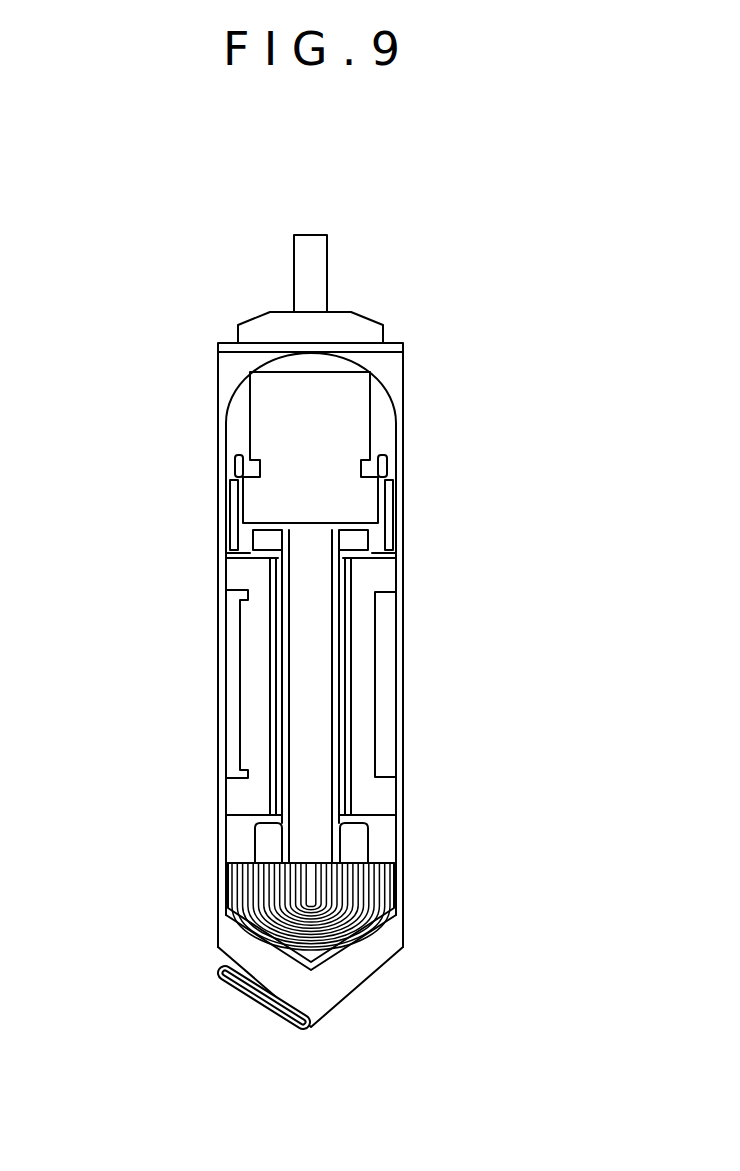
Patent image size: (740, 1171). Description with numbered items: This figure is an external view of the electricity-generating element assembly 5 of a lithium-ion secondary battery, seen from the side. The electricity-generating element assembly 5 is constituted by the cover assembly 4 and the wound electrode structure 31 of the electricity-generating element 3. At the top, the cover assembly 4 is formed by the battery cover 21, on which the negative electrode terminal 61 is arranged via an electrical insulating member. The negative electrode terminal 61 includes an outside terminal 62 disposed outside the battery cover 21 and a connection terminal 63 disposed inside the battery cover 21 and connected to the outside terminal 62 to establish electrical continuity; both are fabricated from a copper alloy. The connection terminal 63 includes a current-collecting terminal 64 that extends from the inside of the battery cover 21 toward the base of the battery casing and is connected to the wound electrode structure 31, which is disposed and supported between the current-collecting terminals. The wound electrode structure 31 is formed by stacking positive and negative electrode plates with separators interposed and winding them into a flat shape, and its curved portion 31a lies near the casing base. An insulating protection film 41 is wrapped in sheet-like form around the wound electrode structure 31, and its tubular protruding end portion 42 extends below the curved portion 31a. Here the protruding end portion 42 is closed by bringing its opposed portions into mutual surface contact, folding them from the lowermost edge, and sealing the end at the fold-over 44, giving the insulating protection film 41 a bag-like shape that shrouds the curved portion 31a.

The electricity-generating element 3 is at (224, 427).
The cover assembly 4 is at (228, 330).
The electricity-generating element assembly 5 is at (103, 290).
The battery cover 21 is at (392, 344).
The wound electrode structure 31 is at (239, 677).
The curved portion 31a is at (357, 940).
The insulating protection film 41 is at (218, 933).
The protruding end portion 42 is at (298, 1028).
The fold-over 44 is at (245, 1036).
The negative electrode terminal 61 is at (352, 320).
The outside terminal 62 is at (343, 298).
The connection terminal 63 is at (353, 415).
The current-collecting terminal 64 is at (367, 665).